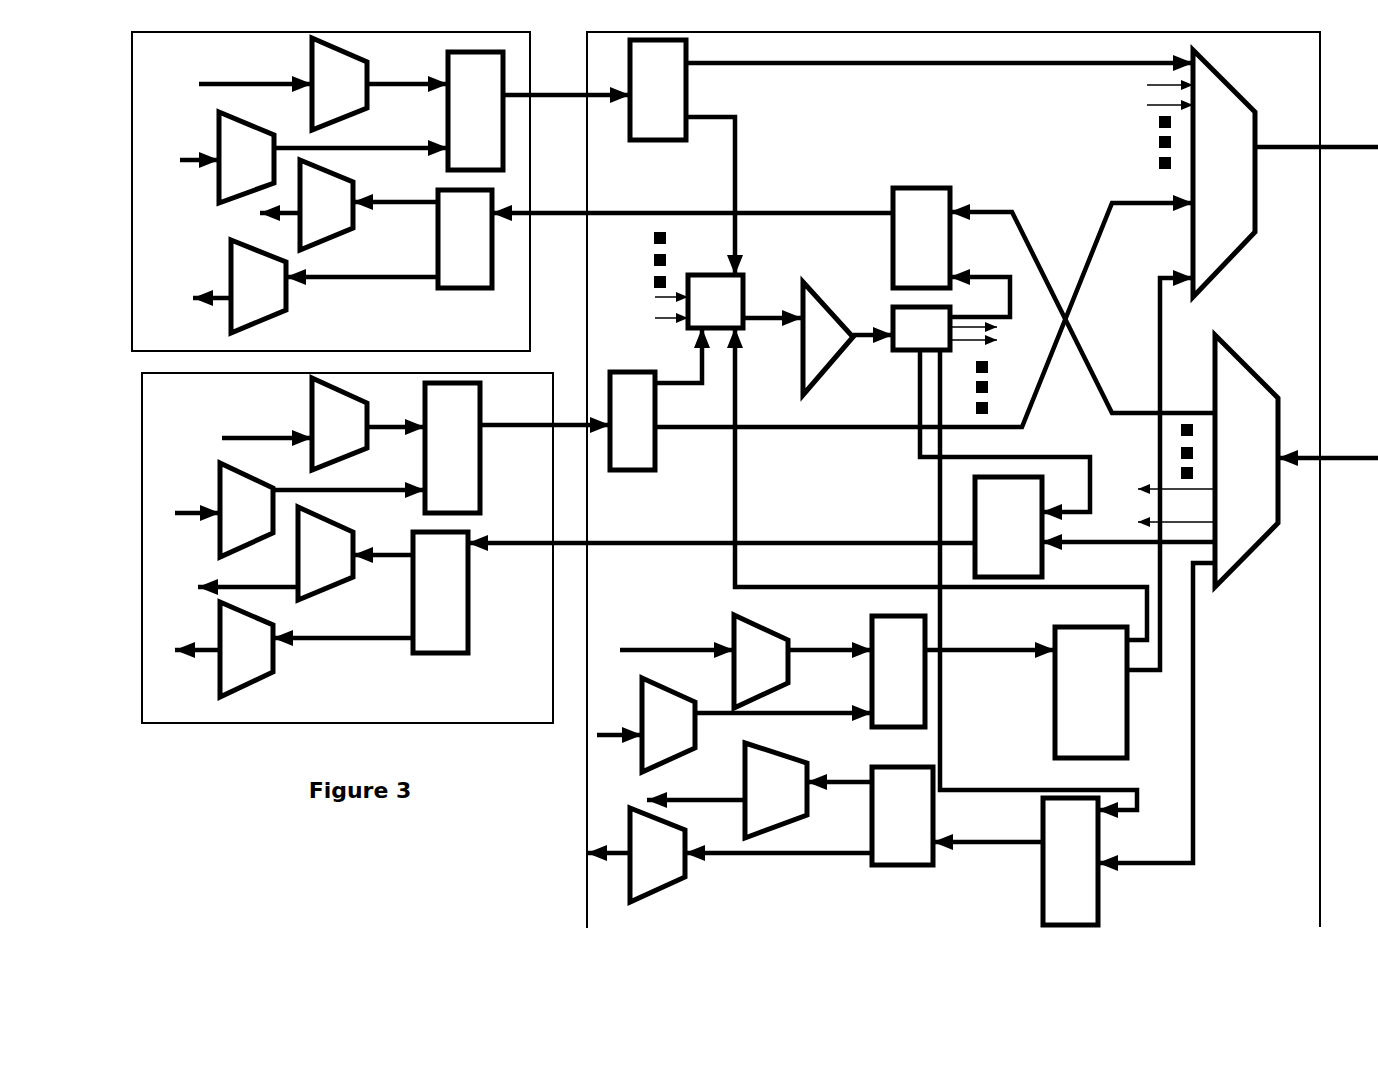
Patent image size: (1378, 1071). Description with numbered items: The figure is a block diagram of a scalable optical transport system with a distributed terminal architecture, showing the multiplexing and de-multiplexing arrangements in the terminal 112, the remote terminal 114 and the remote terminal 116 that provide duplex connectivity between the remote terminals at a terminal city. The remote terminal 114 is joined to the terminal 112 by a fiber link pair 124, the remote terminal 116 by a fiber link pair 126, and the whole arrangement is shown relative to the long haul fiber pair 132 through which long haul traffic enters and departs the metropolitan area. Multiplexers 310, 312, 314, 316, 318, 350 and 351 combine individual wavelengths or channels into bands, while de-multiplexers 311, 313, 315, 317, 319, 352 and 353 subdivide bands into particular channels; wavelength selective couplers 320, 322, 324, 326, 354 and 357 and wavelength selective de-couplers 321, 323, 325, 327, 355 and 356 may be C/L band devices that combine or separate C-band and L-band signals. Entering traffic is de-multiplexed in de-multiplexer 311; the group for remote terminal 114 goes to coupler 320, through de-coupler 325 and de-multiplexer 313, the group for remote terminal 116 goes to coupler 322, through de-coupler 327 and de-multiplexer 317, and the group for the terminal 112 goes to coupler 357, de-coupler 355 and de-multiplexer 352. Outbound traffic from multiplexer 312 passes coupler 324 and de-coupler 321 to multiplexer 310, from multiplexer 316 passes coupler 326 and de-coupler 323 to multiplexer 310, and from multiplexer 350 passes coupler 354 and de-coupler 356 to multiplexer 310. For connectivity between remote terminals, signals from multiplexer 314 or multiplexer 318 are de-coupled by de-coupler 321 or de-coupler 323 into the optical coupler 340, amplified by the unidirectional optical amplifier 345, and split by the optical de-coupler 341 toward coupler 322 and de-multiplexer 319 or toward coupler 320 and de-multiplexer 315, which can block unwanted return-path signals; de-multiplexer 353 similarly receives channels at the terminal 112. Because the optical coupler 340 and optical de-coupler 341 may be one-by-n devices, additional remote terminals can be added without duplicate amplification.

The terminal 112 is at (953, 480).
The remote terminal 114 is at (331, 191).
The remote terminal 116 is at (347, 548).
The fiber link pair 124 is at (566, 169).
The fiber link pair 126 is at (545, 461).
The long haul fiber pair 132 is at (1316, 322).
The multiplexer 310 is at (1201, 173).
The de-multiplexer 311 is at (1114, 537).
The multiplexer 312 is at (323, 84).
The de-multiplexer 313 is at (349, 205).
The multiplexer 314 is at (314, 157).
The de-multiplexer 315 is at (315, 286).
The multiplexer 316 is at (323, 424).
The de-multiplexer 317 is at (305, 553).
The multiplexer 318 is at (300, 510).
The de-multiplexer 319 is at (294, 649).
The wavelength selective coupler 320 is at (921, 238).
The wavelength selective de-coupler 321 is at (911, 157).
The wavelength selective coupler 322 is at (1008, 527).
The wavelength selective de-coupler 323 is at (901, 336).
The wavelength selective coupler 324 is at (475, 111).
The wavelength selective de-coupler 325 is at (665, 239).
The wavelength selective coupler 326 is at (452, 448).
The wavelength selective de-coupler 327 is at (694, 592).
The optical coupler 340 is at (728, 280).
The optical de-coupler 341 is at (1015, 543).
The unidirectional optical amplifier 345 is at (848, 338).
The multiplexer 350 is at (746, 661).
The multiplexer 351 is at (734, 725).
The de-multiplexer 352 is at (759, 790).
The de-multiplexer 353 is at (729, 855).
The wavelength selective coupler 354 is at (963, 671).
The wavelength selective de-coupler 355 is at (902, 816).
The wavelength selective de-coupler 356 is at (964, 518).
The wavelength selective coupler 357 is at (1015, 861).